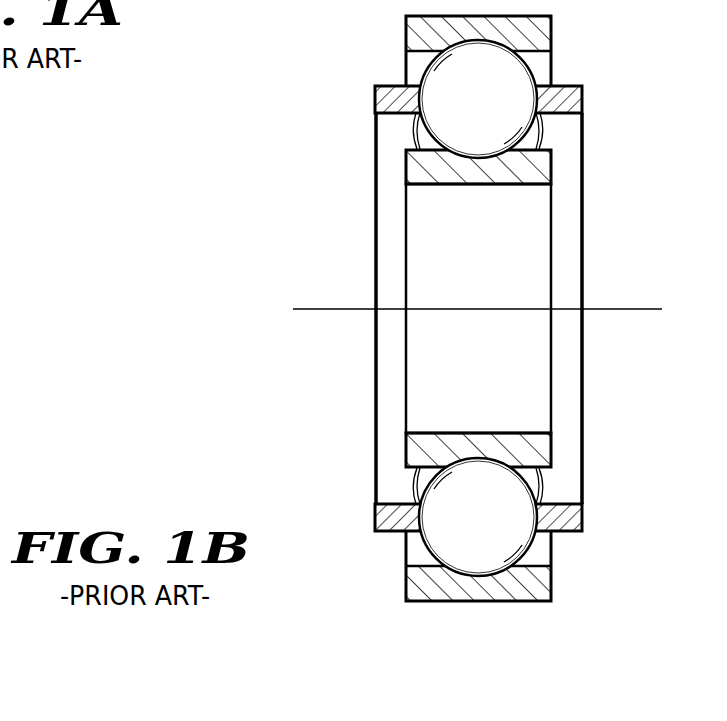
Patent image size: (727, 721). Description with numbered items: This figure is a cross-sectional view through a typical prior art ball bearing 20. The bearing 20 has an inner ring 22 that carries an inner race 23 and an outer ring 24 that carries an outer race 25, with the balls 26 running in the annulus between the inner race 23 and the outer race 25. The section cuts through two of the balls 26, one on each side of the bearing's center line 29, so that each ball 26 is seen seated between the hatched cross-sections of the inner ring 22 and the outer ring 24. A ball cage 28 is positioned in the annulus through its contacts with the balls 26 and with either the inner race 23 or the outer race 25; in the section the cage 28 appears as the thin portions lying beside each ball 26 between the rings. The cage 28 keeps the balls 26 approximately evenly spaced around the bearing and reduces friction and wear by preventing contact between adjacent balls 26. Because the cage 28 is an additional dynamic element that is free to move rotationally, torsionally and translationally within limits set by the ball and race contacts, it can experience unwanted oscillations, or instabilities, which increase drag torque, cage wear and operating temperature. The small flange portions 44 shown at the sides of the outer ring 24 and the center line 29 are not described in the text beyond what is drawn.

The bearing 20 is at (451, 308).
The inner ring 22 is at (483, 186).
The inner race 23 is at (528, 172).
The outer ring 24 is at (557, 63).
The outer race 25 is at (503, 34).
The balls 26 is at (538, 138).
The ball cage 28 is at (376, 214).
The axis of rotation 29 is at (628, 309).
The retainer flange 44 is at (582, 98).